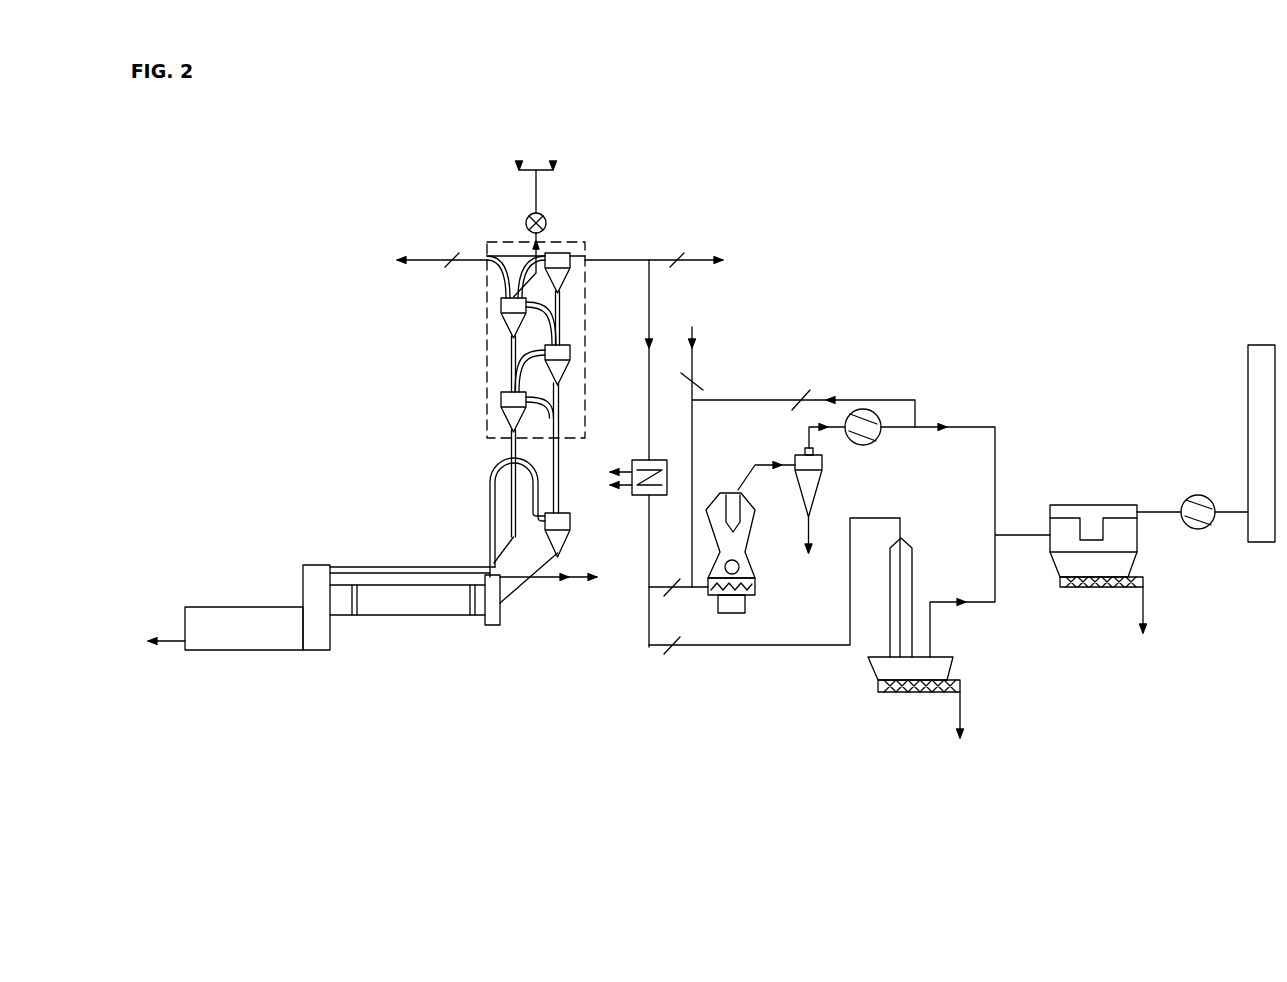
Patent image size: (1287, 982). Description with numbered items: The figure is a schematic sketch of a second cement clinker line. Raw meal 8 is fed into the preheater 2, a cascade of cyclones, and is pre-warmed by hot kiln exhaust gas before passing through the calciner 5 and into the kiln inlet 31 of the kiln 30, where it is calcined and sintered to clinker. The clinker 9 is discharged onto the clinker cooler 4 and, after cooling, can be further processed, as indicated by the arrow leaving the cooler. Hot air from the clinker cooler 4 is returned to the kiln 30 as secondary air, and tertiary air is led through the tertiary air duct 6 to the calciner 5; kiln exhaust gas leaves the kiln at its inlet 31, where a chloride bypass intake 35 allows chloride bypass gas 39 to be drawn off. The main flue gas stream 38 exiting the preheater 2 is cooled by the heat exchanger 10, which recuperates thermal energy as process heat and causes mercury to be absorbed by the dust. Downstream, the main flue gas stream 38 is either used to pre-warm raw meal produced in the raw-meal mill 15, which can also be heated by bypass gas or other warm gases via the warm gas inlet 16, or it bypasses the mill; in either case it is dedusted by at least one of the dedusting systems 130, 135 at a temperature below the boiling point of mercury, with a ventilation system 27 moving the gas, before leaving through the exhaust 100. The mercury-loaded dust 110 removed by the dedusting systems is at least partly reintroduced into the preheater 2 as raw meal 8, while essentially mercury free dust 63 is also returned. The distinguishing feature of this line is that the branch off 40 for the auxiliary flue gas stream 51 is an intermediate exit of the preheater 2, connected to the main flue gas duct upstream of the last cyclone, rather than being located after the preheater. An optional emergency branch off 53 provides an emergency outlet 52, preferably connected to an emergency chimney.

The preheater 2 is at (588, 362).
The clinker cooler 4 is at (248, 642).
The calciner 5 is at (488, 490).
The tertiary air duct 6 is at (410, 563).
The raw meal 8 is at (514, 166).
The clinker 9 is at (172, 647).
The heat exchanger 10 is at (647, 455).
The raw-meal mill 15 is at (757, 529).
The warm gas inlet 16 is at (692, 325).
The ventilation system 27 is at (863, 447).
The kiln 30 is at (410, 608).
The kiln inlet 31 is at (502, 601).
The chloride bypass intake 35 is at (508, 566).
The main flue gas stream 38 is at (590, 255).
The chloride bypass gas 39 is at (578, 584).
The branch off 40 is at (523, 250).
The auxiliary flue gas stream 51 is at (431, 255).
The emergency outlet 52 is at (722, 252).
The emergency branch off 53 is at (650, 255).
The mercury free dust 63 is at (556, 166).
The exhaust 100 is at (1246, 362).
The mercury-loaded dust 110 is at (963, 710).
The dedusting system 130 is at (1092, 500).
The dedusting system 135 is at (915, 573).